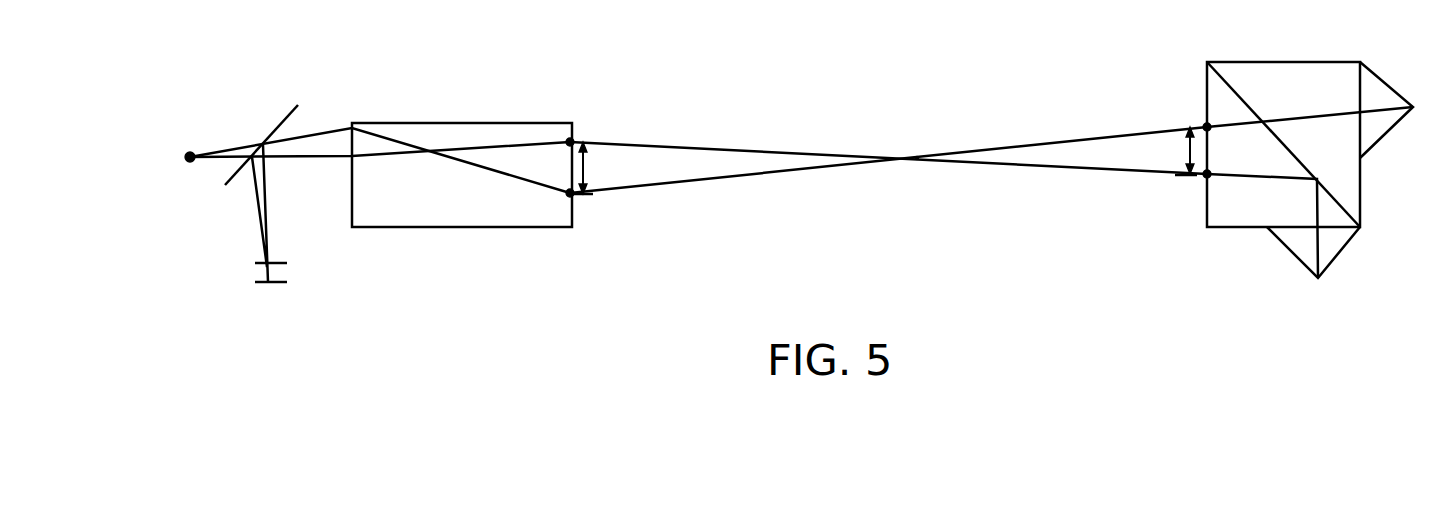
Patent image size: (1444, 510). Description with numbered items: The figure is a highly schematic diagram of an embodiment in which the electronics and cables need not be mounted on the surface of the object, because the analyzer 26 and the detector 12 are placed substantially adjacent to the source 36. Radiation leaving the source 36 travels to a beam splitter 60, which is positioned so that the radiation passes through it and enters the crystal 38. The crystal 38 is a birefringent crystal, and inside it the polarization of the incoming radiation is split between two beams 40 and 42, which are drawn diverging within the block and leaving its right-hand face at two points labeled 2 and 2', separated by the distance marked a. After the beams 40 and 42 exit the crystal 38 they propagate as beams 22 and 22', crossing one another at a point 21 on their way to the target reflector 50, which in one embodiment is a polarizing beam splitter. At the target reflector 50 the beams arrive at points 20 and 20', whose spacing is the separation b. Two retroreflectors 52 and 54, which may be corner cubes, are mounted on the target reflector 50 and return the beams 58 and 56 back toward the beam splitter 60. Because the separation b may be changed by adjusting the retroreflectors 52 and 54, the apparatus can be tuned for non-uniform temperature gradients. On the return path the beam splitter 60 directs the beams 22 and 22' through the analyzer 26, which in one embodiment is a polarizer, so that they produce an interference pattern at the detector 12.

The source 36 is at (187, 153).
The beam splitter 60 is at (280, 122).
The beam 42 is at (515, 141).
The beam 40 is at (497, 175).
The crystal 38 is at (420, 123).
The analyzer 26 is at (257, 264).
The detector 12 is at (280, 284).
The image point 2 is at (588, 126).
The image point 2' is at (592, 211).
The separation distance a is at (591, 168).
The beam 22' is at (888, 132).
The beam 22 is at (888, 186).
The crossing point 21 is at (913, 163).
The focal point 20 is at (1181, 112).
The focal point 20' is at (1180, 192).
The separation b is at (1182, 151).
The target reflector 50 is at (1280, 61).
The retroreflector 52 is at (1383, 78).
The retroreflector 54 is at (1287, 250).
The beam 58 is at (1293, 122).
The beam 56 is at (1230, 177).